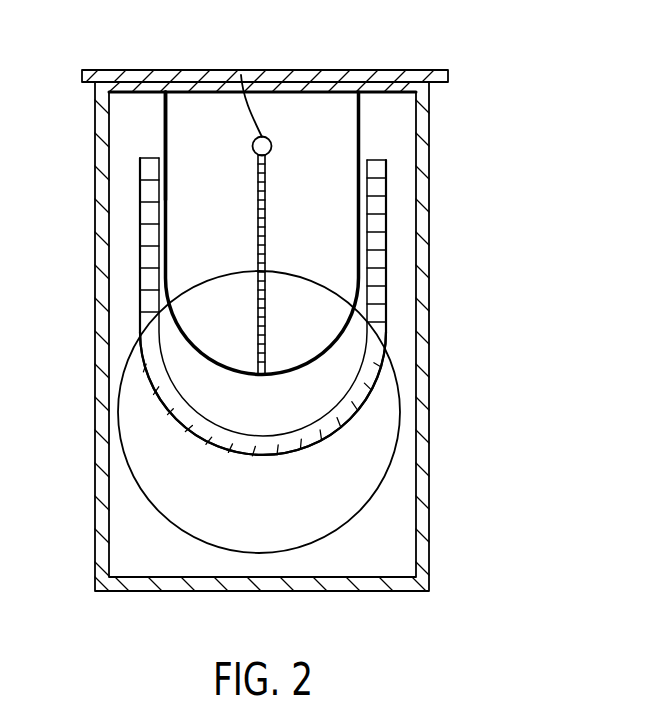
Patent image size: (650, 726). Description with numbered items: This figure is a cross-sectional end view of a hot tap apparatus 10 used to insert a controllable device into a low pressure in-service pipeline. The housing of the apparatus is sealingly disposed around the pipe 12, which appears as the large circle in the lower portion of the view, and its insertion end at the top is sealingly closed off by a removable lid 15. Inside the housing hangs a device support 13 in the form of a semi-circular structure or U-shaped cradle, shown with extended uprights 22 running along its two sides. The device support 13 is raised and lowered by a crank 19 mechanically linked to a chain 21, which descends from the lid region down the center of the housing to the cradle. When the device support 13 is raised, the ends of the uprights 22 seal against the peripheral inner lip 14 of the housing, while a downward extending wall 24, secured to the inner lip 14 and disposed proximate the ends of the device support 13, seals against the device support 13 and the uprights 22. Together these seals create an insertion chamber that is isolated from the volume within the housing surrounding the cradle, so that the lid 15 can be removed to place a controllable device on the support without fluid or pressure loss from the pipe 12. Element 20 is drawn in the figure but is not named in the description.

The hot tap apparatus 10 is at (329, 295).
The pipe 12 is at (390, 464).
The device support 13 is at (355, 420).
The peripheral inner lip 14 is at (396, 97).
The removable lid 15 is at (313, 70).
The crank 19 is at (241, 75).
The annular opening 20 is at (165, 121).
The chain 21 is at (266, 195).
The uprights 22 is at (386, 237).
The downward extending walls 24 is at (360, 140).